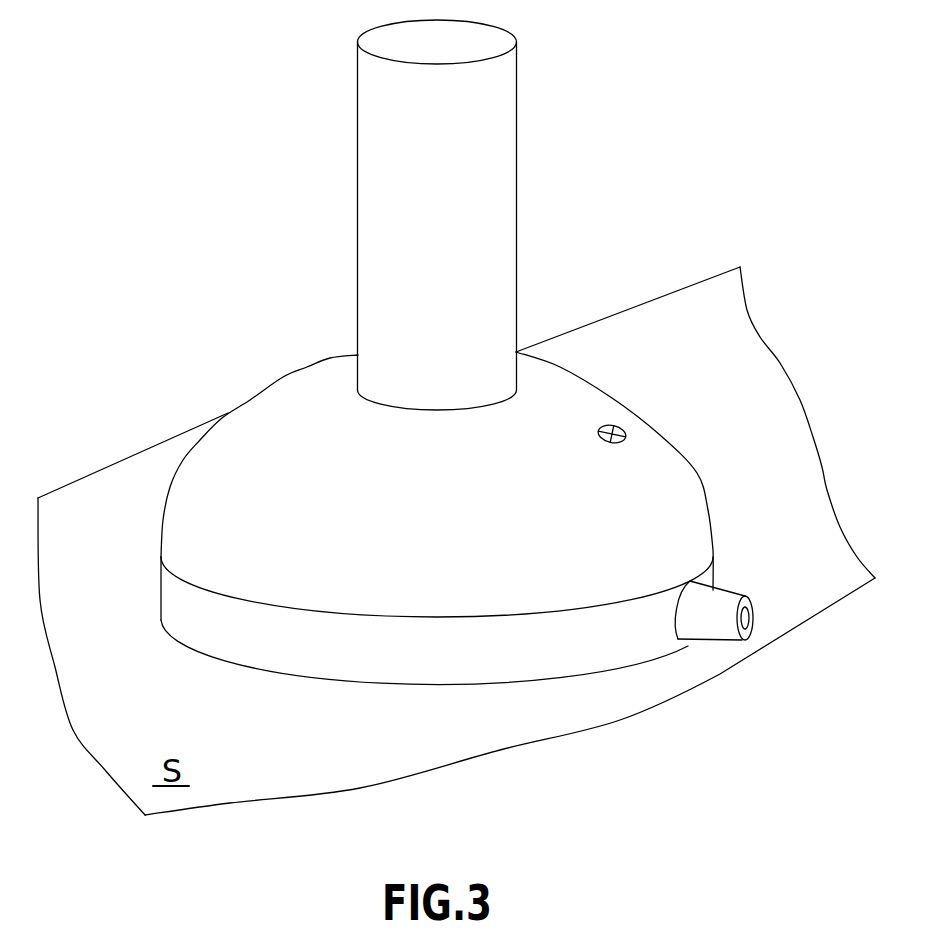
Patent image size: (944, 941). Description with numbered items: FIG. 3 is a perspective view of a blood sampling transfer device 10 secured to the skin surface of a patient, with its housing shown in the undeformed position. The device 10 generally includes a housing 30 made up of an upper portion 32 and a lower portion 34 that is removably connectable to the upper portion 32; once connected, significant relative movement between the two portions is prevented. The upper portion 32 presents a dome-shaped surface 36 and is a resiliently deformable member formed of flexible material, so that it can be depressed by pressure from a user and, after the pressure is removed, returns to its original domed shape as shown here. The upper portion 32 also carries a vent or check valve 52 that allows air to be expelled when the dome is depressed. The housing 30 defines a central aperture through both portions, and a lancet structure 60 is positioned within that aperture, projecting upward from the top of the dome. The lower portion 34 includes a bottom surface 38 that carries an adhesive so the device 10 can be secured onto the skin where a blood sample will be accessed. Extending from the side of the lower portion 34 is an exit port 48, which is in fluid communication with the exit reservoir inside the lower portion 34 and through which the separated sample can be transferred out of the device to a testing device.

The blood sampling transfer device 10 is at (218, 118).
The housing 30 is at (161, 557).
The upper portion 32 is at (697, 472).
The lower portion 34 is at (161, 605).
The dome-shaped surface 36 is at (290, 403).
The bottom surface 38 is at (255, 668).
The exit port 48 is at (725, 592).
The vent or check valve 52 is at (612, 425).
The lancet structure 60 is at (517, 197).